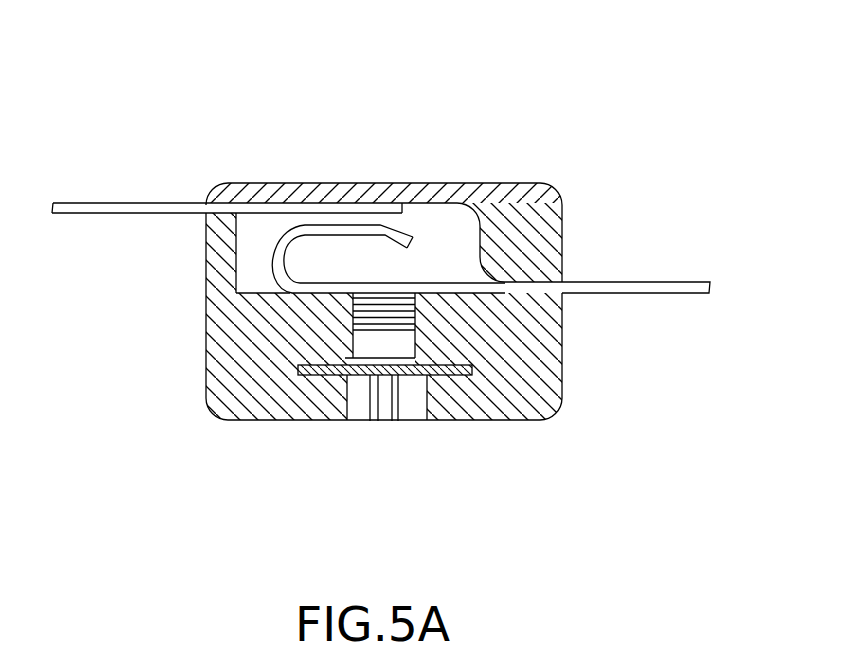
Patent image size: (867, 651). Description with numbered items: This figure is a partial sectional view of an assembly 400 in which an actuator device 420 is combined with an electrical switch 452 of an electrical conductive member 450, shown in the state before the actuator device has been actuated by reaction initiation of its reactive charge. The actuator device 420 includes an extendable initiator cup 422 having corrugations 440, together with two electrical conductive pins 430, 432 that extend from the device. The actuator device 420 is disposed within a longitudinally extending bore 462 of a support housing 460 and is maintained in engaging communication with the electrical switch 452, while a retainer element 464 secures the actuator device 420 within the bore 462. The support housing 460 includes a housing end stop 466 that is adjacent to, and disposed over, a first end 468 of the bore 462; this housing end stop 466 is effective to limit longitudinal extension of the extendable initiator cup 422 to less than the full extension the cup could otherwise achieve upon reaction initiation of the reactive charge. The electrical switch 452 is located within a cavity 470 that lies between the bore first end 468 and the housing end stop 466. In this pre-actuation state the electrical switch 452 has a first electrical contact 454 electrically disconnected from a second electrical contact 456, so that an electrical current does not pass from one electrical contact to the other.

The assembly 400 is at (514, 126).
The actuator device 420 is at (428, 342).
The extendable initiator cup 422 is at (352, 335).
The electrical conductive pin 430 is at (372, 421).
The electrical conductive pin 432 is at (393, 421).
The corrugations 440 is at (428, 312).
The electrical conductive member 450 is at (100, 202).
The electrical switch 452 is at (262, 249).
The first electrical contact 454 is at (280, 202).
The second electrical contact 456 is at (417, 238).
The support housing 460 is at (563, 378).
The bore 462 is at (300, 365).
The retainer element 464 is at (413, 378).
The housing end stop 466 is at (340, 202).
The first end of the bore 468 is at (352, 294).
The cavity 470 is at (247, 232).